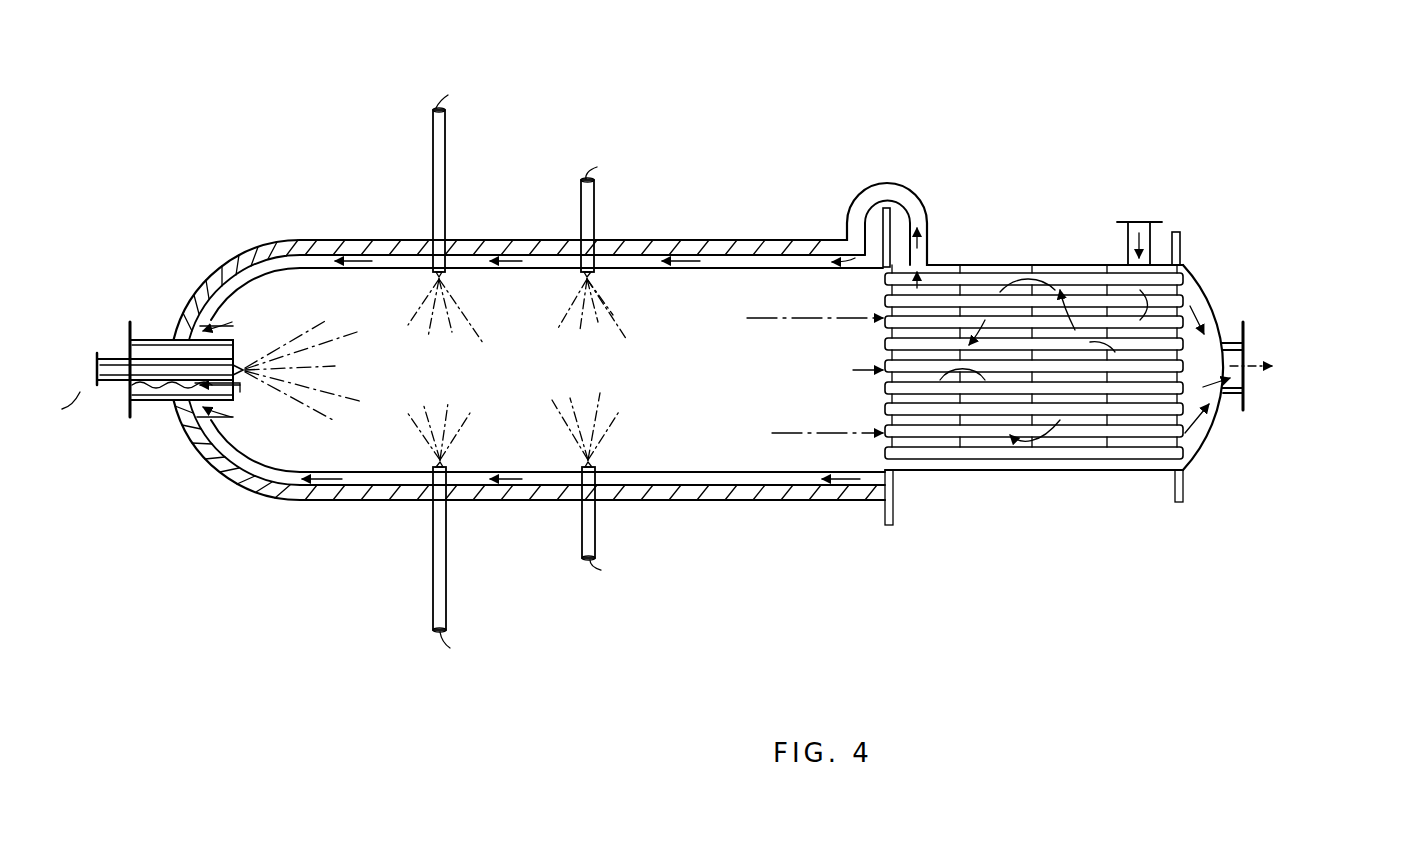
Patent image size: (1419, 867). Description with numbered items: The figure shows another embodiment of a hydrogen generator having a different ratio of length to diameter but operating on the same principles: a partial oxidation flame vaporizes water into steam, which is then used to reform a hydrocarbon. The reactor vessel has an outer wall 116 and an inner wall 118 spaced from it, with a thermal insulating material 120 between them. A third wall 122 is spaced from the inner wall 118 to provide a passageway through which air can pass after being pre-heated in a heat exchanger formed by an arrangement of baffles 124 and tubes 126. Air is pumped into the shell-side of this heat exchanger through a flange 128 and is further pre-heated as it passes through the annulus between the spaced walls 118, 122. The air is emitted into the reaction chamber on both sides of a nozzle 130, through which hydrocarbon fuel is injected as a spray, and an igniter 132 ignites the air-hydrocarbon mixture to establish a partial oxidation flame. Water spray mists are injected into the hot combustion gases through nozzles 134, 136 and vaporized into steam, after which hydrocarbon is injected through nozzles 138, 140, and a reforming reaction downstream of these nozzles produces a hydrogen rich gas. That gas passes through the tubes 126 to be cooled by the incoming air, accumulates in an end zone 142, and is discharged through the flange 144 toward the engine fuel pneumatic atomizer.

The outer wall 116 is at (707, 240).
The inner wall 118 is at (636, 246).
The thermal insulating material 120 is at (752, 252).
The third wall 122 is at (698, 269).
The baffles 124 is at (960, 268).
The tubes 126 is at (1066, 282).
The flange 128 is at (1148, 246).
The nozzle 130 is at (113, 358).
The igniter 132 is at (237, 389).
The nozzle 134 is at (433, 276).
The nozzle 136 is at (433, 466).
The nozzle 138 is at (583, 276).
The nozzle 140 is at (586, 466).
The end zone 142 is at (1197, 306).
The flange 144 is at (1233, 393).